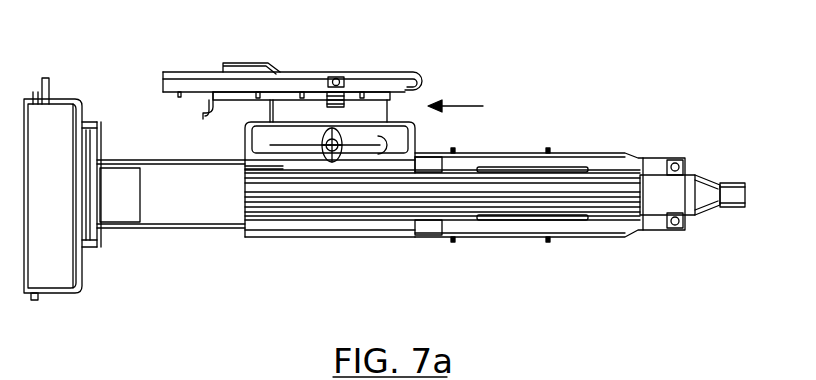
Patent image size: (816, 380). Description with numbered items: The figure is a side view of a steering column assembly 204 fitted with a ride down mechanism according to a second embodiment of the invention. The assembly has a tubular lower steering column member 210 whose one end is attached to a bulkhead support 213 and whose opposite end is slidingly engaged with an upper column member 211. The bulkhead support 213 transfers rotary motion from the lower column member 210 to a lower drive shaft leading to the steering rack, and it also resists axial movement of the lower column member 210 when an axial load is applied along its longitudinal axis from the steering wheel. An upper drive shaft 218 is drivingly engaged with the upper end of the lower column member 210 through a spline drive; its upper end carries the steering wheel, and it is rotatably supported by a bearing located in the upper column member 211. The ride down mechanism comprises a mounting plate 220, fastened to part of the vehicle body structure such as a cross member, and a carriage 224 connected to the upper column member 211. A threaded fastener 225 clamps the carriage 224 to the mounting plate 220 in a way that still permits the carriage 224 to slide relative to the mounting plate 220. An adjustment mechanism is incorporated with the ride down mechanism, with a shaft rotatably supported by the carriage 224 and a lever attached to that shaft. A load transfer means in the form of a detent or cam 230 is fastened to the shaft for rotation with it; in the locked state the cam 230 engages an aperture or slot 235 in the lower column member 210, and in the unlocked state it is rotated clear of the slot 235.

The dispensing assembly 204 is at (440, 67).
The lower steering column member 210 is at (65, 185).
The upper column member 211 is at (538, 150).
The bulkhead support 213 is at (83, 273).
The upper drive shaft 218 is at (699, 176).
The mounting plate 220 is at (291, 71).
The carriage 224 is at (398, 99).
The threaded fastener 225 is at (330, 77).
The cam 230 is at (340, 157).
The slot 235 is at (283, 153).